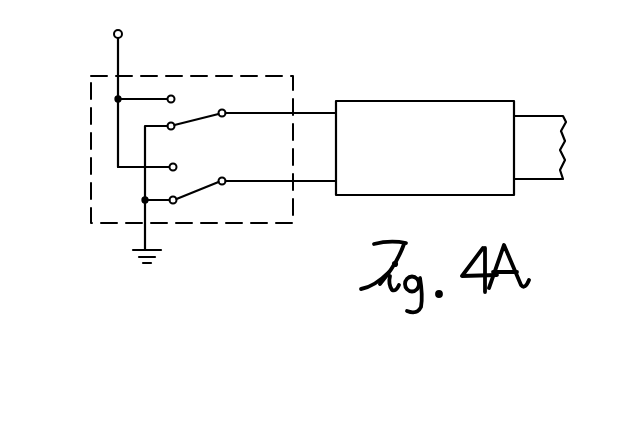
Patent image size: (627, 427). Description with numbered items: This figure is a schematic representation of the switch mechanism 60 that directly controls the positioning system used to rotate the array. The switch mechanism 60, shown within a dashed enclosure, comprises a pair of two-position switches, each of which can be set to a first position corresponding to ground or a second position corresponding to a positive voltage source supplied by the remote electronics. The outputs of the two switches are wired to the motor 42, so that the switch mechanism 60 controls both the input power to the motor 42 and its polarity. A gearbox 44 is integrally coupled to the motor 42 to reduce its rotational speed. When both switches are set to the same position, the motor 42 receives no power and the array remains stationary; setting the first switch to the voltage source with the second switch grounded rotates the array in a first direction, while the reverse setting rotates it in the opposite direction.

The switch mechanism 60 is at (218, 76).
The motor 42 is at (425, 100).
The gearbox 44 is at (541, 116).